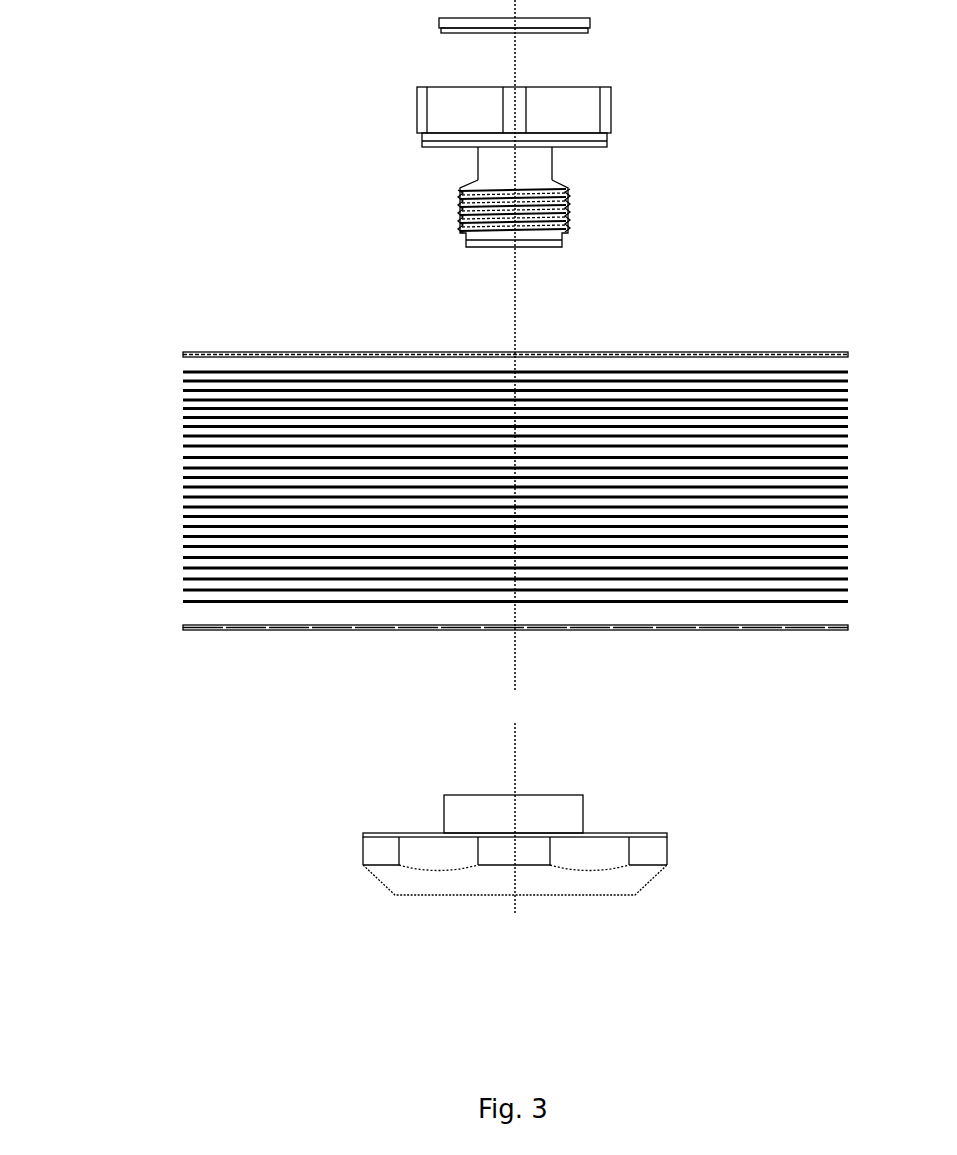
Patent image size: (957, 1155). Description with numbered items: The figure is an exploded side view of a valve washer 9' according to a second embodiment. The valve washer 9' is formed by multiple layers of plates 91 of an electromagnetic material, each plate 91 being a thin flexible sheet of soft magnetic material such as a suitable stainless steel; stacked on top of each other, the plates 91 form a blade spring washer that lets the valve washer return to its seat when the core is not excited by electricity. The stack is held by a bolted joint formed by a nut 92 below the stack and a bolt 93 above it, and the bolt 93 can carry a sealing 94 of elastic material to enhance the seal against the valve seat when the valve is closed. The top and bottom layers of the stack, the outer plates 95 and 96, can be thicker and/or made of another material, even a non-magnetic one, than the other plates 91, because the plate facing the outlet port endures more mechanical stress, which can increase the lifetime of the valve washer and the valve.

The valve washer 9' is at (454, 456).
The plates 91 is at (175, 420).
The nut 92 is at (399, 833).
The bolt 93 is at (457, 180).
The sealing 94 is at (438, 33).
The outer plate (top layer) 95 is at (190, 365).
The outer plate (bottom layer) 96 is at (182, 622).